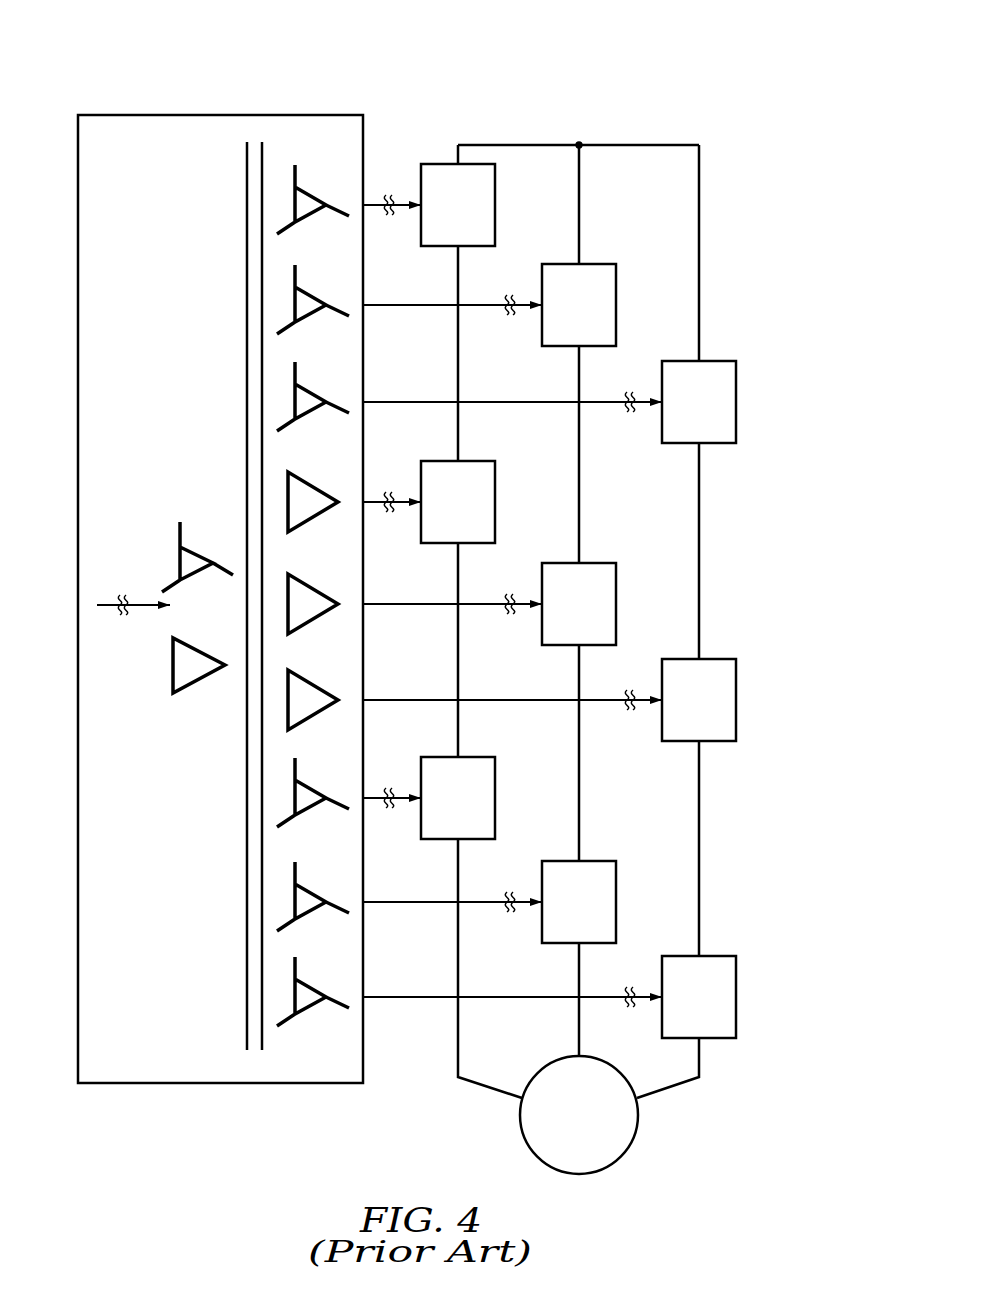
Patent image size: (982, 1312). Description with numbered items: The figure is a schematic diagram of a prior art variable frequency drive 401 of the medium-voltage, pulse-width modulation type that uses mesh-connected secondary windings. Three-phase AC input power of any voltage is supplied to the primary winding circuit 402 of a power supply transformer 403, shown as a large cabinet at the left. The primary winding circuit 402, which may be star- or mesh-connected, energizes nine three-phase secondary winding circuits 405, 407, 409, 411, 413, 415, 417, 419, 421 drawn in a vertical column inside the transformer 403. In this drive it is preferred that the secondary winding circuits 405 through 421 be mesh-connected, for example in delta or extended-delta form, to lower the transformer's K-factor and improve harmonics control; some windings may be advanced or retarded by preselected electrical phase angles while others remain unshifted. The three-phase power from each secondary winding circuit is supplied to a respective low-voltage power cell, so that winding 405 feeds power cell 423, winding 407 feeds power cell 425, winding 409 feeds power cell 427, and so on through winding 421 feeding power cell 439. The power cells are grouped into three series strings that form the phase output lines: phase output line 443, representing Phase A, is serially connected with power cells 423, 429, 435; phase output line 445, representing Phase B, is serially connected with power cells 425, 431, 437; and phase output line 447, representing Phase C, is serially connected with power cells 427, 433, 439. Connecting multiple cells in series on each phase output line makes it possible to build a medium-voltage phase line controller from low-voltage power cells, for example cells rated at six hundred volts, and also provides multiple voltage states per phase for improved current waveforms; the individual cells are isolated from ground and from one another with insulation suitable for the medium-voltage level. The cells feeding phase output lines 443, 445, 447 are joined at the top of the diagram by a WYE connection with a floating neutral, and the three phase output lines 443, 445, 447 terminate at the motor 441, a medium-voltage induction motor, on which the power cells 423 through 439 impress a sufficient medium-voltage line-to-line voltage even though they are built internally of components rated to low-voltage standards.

The variable frequency drive 401 is at (761, 39).
The primary winding circuit 402 is at (190, 696).
The power supply transformer 403 is at (160, 115).
The secondary winding circuit 405 is at (316, 191).
The secondary winding circuit 407 is at (316, 291).
The secondary winding circuit 409 is at (316, 388).
The secondary winding circuit 411 is at (315, 487).
The secondary winding circuit 413 is at (315, 589).
The secondary winding circuit 415 is at (315, 685).
The secondary winding circuit 417 is at (316, 784).
The secondary winding circuit 419 is at (316, 888).
The secondary winding circuit 421 is at (316, 983).
The power cell 423 is at (437, 164).
The power cell 425 is at (558, 264).
The power cell 427 is at (678, 361).
The power cell 429 is at (437, 461).
The power cell 431 is at (558, 563).
The power cell 433 is at (678, 659).
The power cell 435 is at (437, 757).
The power cell 437 is at (558, 861).
The power cell 439 is at (678, 956).
The motor 441 is at (522, 1127).
The phase output line 443 is at (479, 1088).
The phase output line 445 is at (579, 1035).
The phase output line 447 is at (696, 1065).